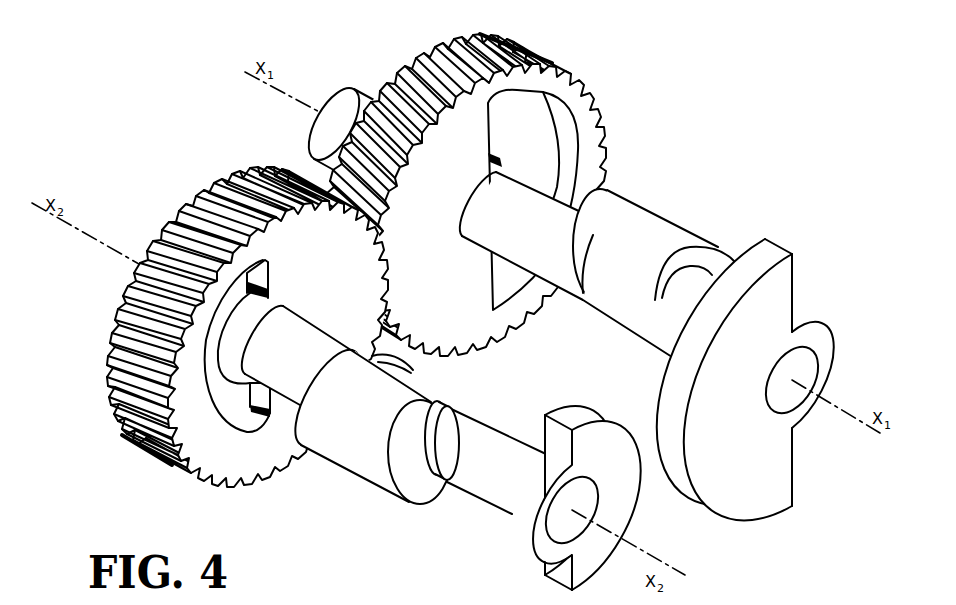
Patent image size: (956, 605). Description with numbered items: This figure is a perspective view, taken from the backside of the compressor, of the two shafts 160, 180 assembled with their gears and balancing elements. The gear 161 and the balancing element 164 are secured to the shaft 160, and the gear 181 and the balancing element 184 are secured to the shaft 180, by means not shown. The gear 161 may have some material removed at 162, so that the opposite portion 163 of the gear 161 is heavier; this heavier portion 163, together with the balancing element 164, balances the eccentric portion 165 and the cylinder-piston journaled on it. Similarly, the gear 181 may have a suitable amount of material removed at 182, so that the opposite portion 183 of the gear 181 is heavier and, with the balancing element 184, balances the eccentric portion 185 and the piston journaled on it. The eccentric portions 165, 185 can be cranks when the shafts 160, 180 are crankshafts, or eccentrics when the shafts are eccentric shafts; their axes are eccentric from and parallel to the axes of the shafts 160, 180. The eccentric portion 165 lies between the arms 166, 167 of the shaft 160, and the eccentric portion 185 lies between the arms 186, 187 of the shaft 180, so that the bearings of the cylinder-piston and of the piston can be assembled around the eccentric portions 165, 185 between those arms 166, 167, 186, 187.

The shaft 160 is at (333, 103).
The gear 161 is at (550, 52).
The material removed portion of gear 162 is at (533, 133).
The opposite portion of gear 163 is at (441, 270).
The balancing element 164 is at (736, 445).
The eccentric portion 165 is at (648, 230).
The arm 166 is at (560, 277).
The arm 167 is at (633, 310).
The shaft 180 is at (333, 466).
The gear 181 is at (172, 466).
The material removed portion of gear 182 is at (220, 400).
The opposite portion of gear 183 is at (339, 285).
The balancing element 184 is at (625, 487).
The eccentric portion 185 is at (360, 463).
The arm 186 is at (387, 363).
The arm 187 is at (440, 397).